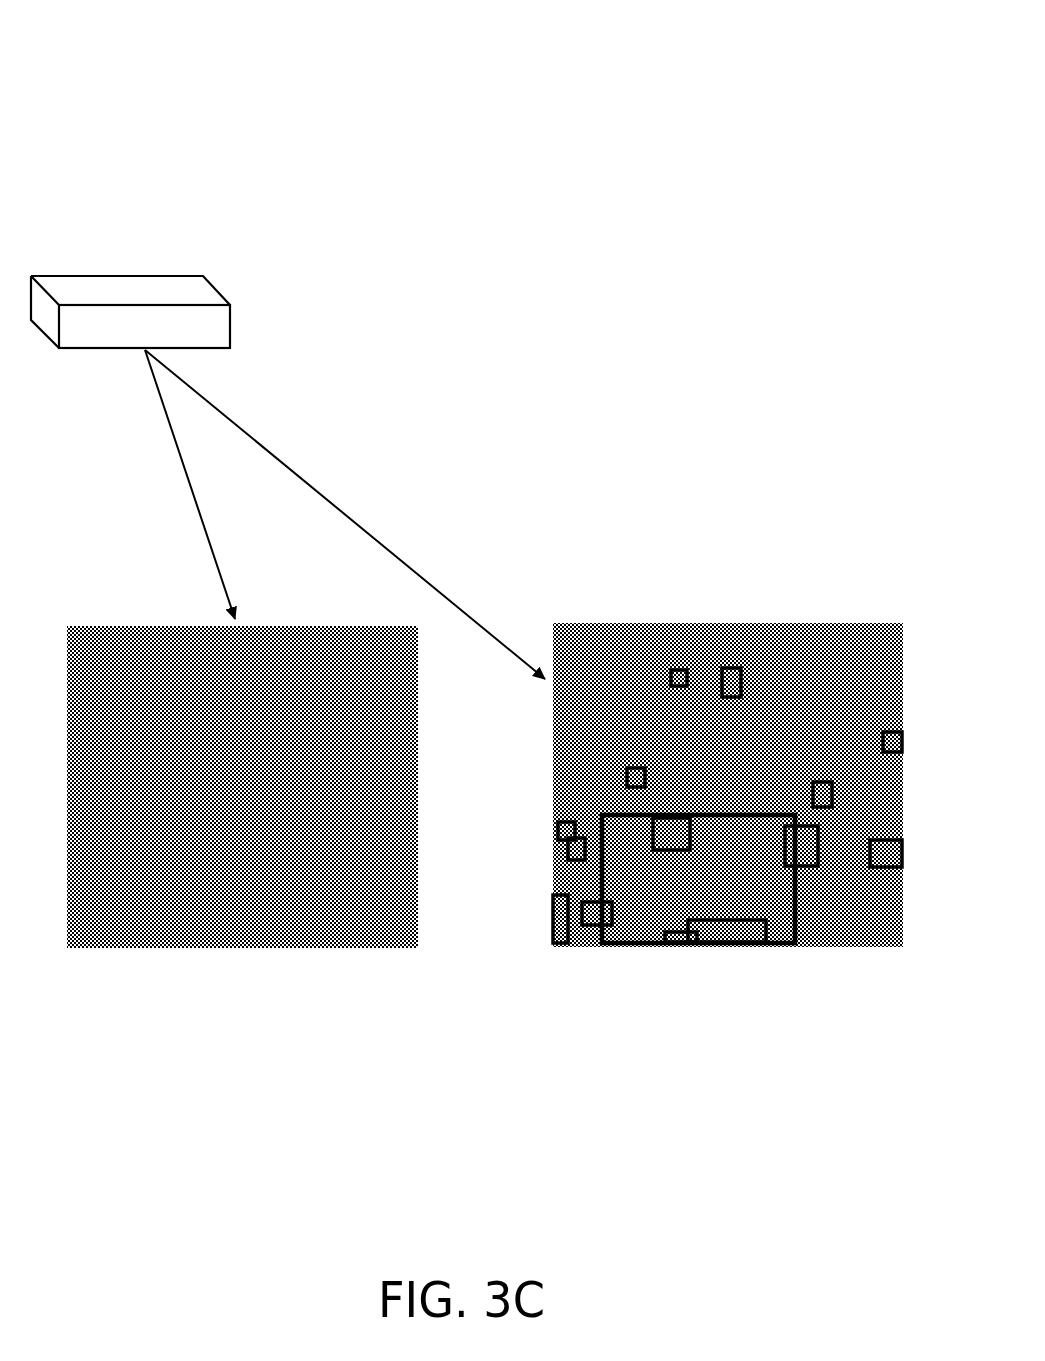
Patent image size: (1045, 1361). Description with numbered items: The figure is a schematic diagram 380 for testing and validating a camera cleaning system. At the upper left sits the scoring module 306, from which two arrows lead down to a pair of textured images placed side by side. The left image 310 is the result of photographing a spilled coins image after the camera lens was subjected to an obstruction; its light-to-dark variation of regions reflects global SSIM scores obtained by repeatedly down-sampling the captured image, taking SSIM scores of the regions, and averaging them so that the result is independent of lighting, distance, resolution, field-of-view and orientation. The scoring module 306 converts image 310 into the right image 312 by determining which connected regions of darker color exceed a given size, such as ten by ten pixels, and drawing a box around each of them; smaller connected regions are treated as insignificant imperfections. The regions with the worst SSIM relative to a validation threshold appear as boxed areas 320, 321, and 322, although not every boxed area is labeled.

The schematic diagram 380 is at (824, 24).
The scoring module 306 is at (127, 275).
The image 310 is at (162, 625).
The image 312 is at (598, 622).
The boxed area 320 is at (682, 669).
The boxed area 321 is at (734, 667).
The boxed area 322 is at (900, 849).